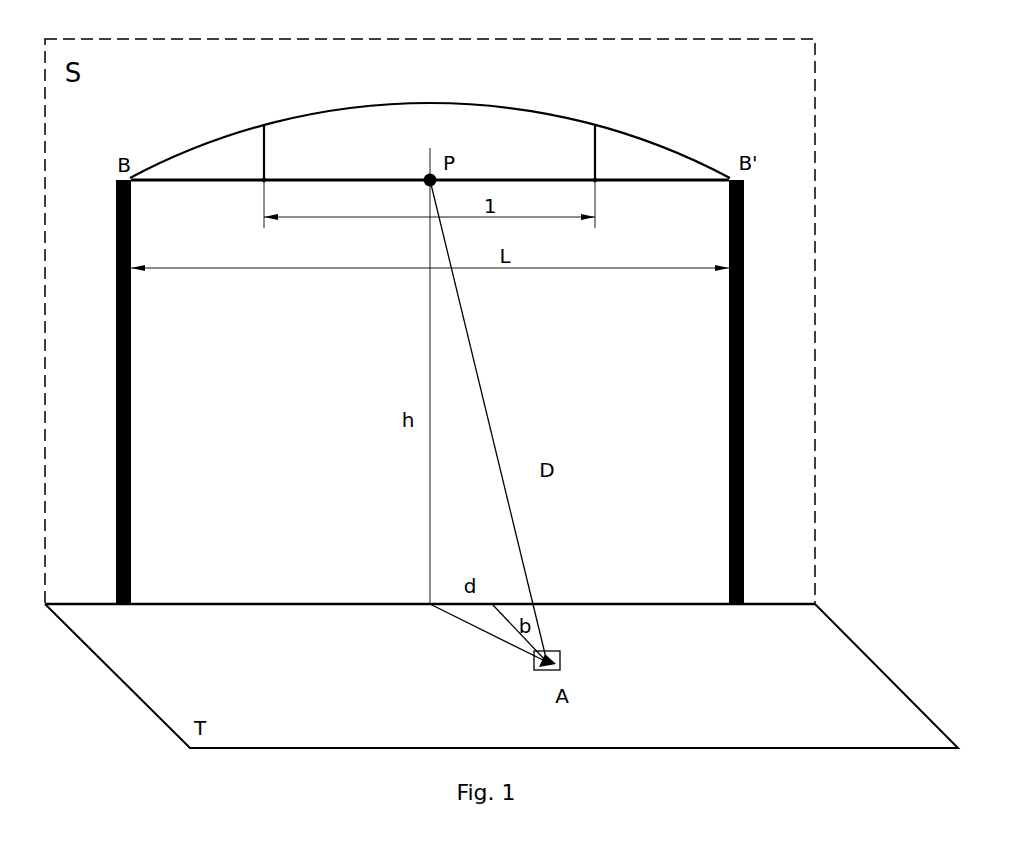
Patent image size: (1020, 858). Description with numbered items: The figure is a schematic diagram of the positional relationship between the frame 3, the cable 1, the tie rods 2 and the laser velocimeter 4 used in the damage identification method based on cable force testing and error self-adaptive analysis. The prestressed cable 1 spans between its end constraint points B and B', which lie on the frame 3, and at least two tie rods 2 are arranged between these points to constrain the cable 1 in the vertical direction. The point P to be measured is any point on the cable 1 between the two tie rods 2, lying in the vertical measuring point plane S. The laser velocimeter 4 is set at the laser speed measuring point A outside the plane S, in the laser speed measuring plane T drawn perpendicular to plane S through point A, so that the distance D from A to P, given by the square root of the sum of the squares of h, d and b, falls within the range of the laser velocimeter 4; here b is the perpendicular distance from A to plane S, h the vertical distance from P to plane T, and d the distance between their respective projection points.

The cable 1 is at (430, 123).
The tie rod 2 is at (463, 124).
The frame 3 is at (436, 392).
The laser velocimeter 4 is at (588, 671).